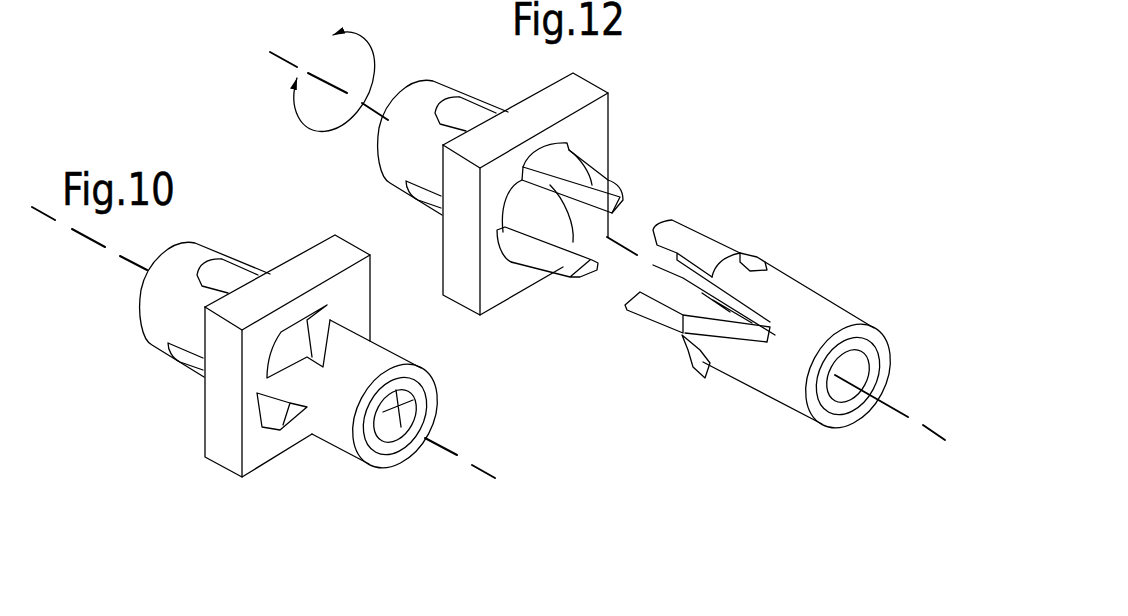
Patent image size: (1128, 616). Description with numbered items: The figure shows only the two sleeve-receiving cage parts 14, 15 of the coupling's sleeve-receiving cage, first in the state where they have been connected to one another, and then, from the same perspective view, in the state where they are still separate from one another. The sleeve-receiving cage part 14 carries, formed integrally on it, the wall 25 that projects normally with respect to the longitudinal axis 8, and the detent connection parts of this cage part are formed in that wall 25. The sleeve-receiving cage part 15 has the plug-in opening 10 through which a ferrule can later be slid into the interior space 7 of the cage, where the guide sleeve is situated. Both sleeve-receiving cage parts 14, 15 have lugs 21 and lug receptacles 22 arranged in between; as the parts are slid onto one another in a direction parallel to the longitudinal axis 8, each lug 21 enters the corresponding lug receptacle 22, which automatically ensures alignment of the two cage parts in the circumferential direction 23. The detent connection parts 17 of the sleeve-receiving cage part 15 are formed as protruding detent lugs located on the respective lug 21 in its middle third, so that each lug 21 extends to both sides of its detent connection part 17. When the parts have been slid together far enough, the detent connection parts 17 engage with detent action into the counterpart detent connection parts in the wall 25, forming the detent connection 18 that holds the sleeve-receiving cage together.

In FIG. 10, the interior space 7 is at (390, 402).
In FIG. 10, the longitudinal axis 8 is at (473, 465).
In FIG. 12, the longitudinal axis 8 is at (622, 252).
In FIG. 10, the plug-in opening 10 is at (385, 435).
In FIG. 12, the plug-in opening 10 is at (845, 393).
In FIG. 10, the sleeve-receiving cage part 14 is at (165, 310).
In FIG. 12, the sleeve-receiving cage part 14 is at (407, 145).
In FIG. 10, the sleeve-receiving cage part 15 is at (335, 430).
In FIG. 12, the sleeve-receiving cage part 15 is at (793, 380).
In FIG. 12, the detent connection part 17 is at (750, 253).
In FIG. 10, the detent connection 18 is at (305, 318).
In FIG. 12, the lug 21 is at (587, 172).
In FIG. 12, the lug receptacle 22 is at (547, 253).
In FIG. 12, the circumferential direction 23 is at (377, 53).
In FIG. 10, the wall 25 is at (225, 440).
In FIG. 12, the wall 25 is at (463, 287).